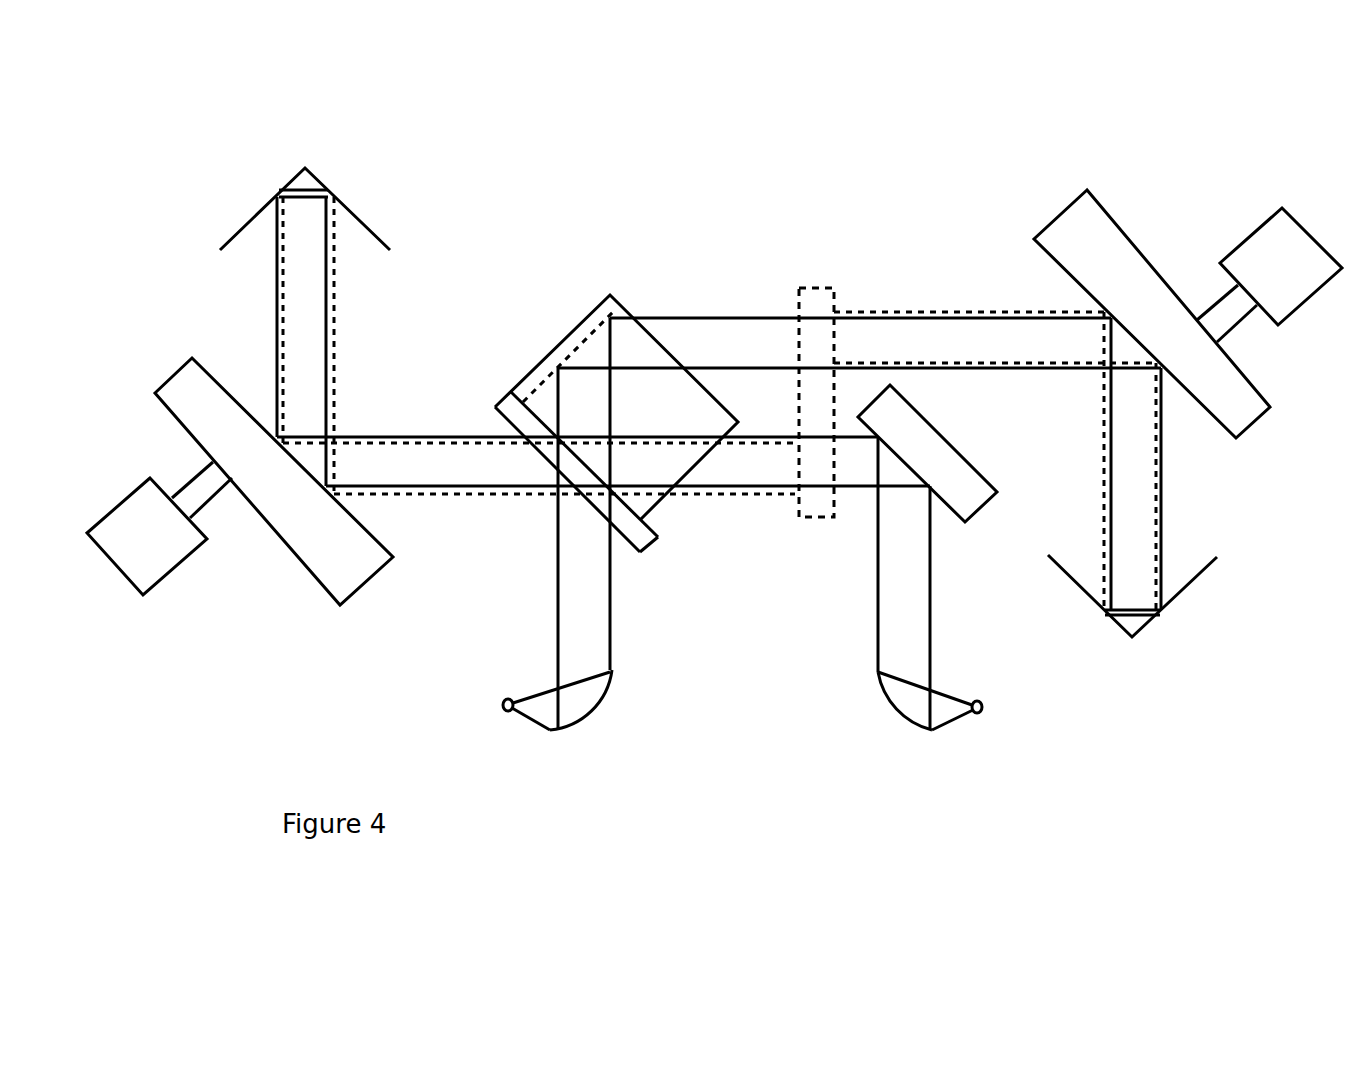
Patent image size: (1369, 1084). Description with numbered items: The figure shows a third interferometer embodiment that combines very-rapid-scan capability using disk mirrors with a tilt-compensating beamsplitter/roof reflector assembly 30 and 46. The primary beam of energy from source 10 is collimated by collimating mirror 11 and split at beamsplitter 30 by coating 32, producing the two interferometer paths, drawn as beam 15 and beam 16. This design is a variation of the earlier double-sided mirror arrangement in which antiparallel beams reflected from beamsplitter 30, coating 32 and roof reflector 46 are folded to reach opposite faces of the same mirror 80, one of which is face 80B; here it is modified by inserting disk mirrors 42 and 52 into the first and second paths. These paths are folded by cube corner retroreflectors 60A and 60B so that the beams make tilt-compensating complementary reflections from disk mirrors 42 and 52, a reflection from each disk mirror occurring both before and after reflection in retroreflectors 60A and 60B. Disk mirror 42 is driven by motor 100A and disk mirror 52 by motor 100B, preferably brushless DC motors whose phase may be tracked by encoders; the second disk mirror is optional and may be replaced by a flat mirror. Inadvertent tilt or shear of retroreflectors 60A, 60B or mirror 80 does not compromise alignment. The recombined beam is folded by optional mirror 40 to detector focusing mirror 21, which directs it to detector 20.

The source 10 is at (503, 706).
The collimating mirror 11 is at (592, 703).
The first light beam 15 is at (402, 435).
The second light beam 16 is at (698, 318).
The detector 20 is at (983, 706).
The detector focusing mirror 21 is at (893, 703).
The beamsplitter 30 is at (638, 535).
The coating 32 is at (655, 528).
The mirror 40 is at (927, 425).
The disk mirror 42 is at (368, 582).
The roof reflector 46 is at (580, 315).
The disk mirror 52 is at (1102, 207).
The cube corner retroreflector 60A is at (345, 210).
The cube corner retroreflector 60B is at (1158, 615).
The mirror 80 is at (812, 288).
The face of mirror 80B is at (832, 300).
The motor 100A is at (172, 572).
The motor 100B is at (1255, 230).